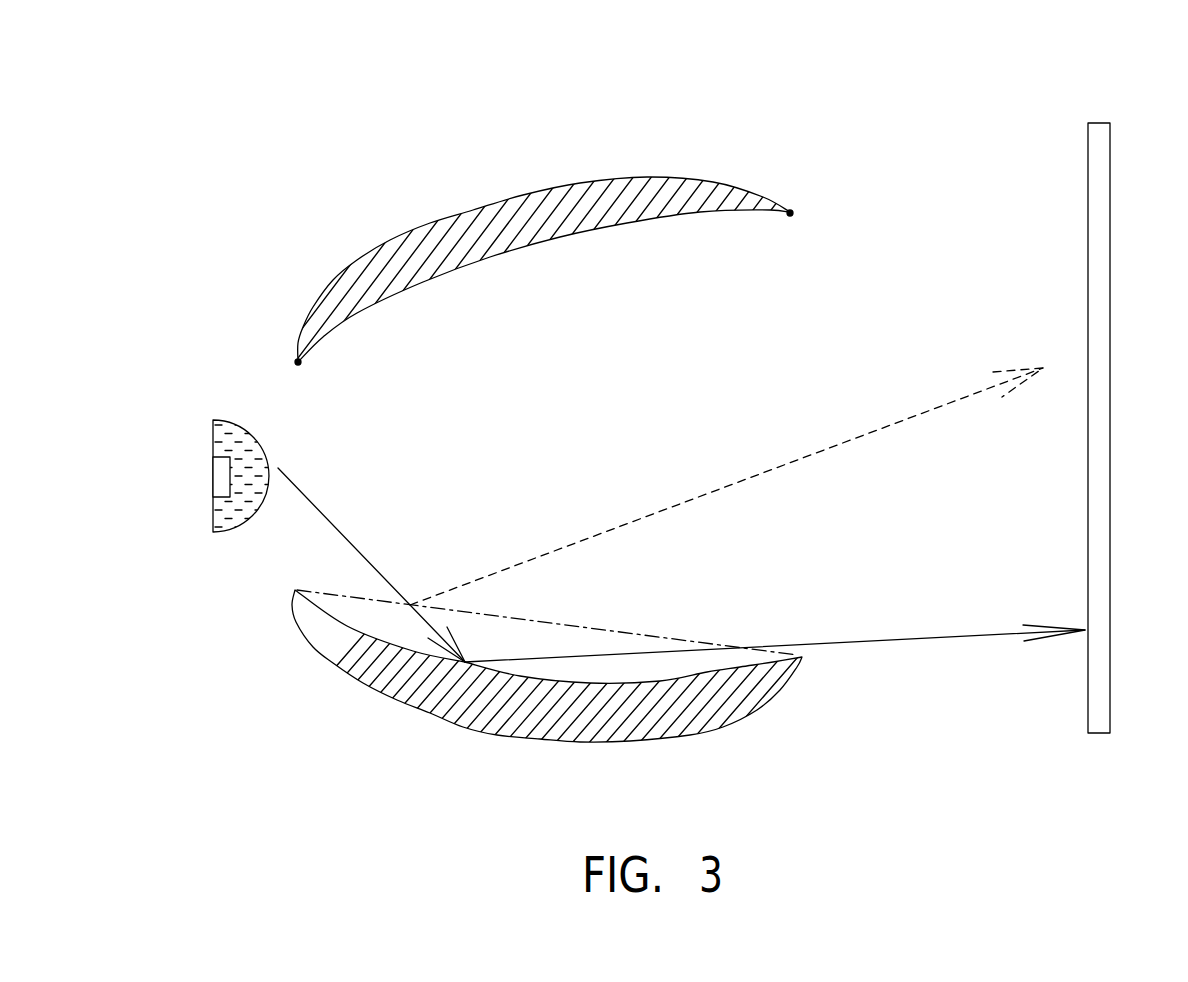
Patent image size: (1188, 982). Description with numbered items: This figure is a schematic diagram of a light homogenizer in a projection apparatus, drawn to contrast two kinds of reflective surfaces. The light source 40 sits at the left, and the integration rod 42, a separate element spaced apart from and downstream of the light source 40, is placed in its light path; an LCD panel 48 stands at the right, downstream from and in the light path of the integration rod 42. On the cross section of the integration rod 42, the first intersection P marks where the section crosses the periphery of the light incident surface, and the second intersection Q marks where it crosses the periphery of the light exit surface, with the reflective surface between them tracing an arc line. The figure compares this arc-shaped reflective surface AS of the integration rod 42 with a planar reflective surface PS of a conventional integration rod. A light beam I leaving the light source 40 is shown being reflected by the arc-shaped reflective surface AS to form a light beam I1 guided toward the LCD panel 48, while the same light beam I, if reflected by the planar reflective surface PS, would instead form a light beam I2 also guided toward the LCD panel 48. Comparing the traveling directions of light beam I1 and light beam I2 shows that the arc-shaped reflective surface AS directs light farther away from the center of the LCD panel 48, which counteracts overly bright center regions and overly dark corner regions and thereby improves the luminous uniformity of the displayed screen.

The light source 40 is at (223, 412).
The integration rod 42 is at (530, 190).
The LCD panel 48 is at (1097, 122).
The first intersection P is at (309, 377).
The second intersection Q is at (793, 216).
The arc-shaped reflective surface AS is at (530, 245).
The planar reflective surface PS is at (583, 625).
The light beam I is at (371, 565).
The light beam I1 is at (775, 634).
The light beam I2 is at (726, 486).